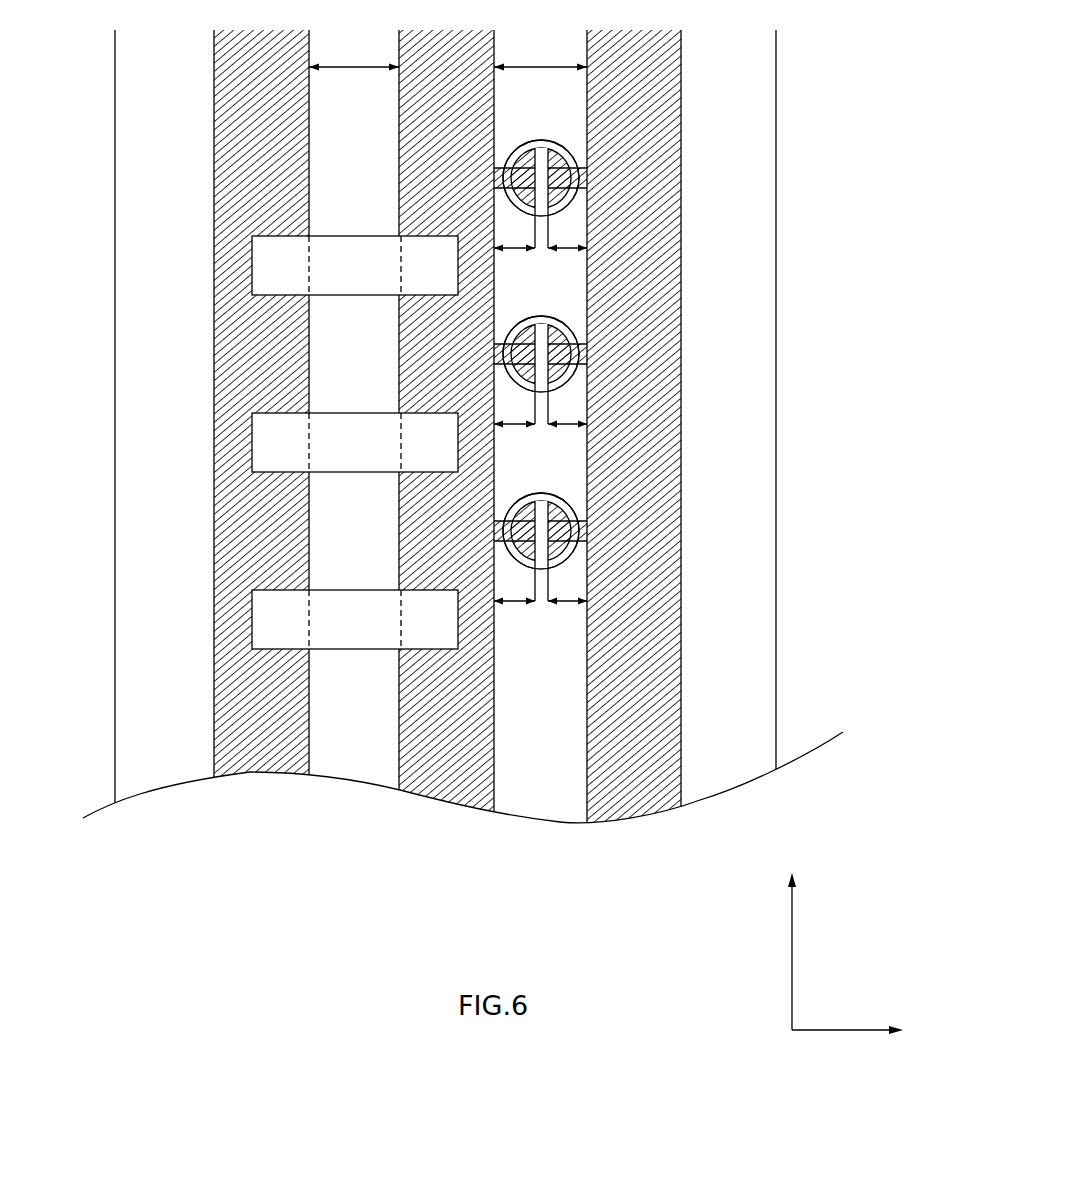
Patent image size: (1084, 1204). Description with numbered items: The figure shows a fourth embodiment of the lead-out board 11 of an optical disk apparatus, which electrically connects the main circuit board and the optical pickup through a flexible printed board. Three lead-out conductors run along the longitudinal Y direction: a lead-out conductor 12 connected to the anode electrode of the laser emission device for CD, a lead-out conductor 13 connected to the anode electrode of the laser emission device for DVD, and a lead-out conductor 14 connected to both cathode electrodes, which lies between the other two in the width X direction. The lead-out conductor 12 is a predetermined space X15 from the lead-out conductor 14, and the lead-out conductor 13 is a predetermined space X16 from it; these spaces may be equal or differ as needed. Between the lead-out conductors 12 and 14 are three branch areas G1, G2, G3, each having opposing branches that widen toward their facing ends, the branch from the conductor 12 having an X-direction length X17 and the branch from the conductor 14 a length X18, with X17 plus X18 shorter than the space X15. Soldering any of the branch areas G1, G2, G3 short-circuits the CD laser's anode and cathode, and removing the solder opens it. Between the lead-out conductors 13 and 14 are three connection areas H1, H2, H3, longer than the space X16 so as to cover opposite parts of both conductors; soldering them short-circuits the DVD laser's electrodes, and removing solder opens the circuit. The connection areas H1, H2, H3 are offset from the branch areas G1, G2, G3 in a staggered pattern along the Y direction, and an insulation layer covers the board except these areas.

The lead-out board 11 is at (757, 227).
The lead-out conductor 12 is at (637, 797).
The lead-out conductor 13 is at (262, 774).
The lead-out conductor 14 is at (445, 790).
The connection area H1 is at (252, 264).
The connection area H2 is at (252, 440).
The connection area H3 is at (252, 616).
The branch area G1 is at (568, 148).
The branch area G2 is at (568, 324).
The branch area G3 is at (568, 501).
The predetermined space X15 is at (540, 55).
The predetermined space X16 is at (354, 55).
The branch length X17 is at (568, 440).
The branch length X18 is at (517, 440).
The X direction X is at (860, 1031).
The Y direction Y is at (787, 935).